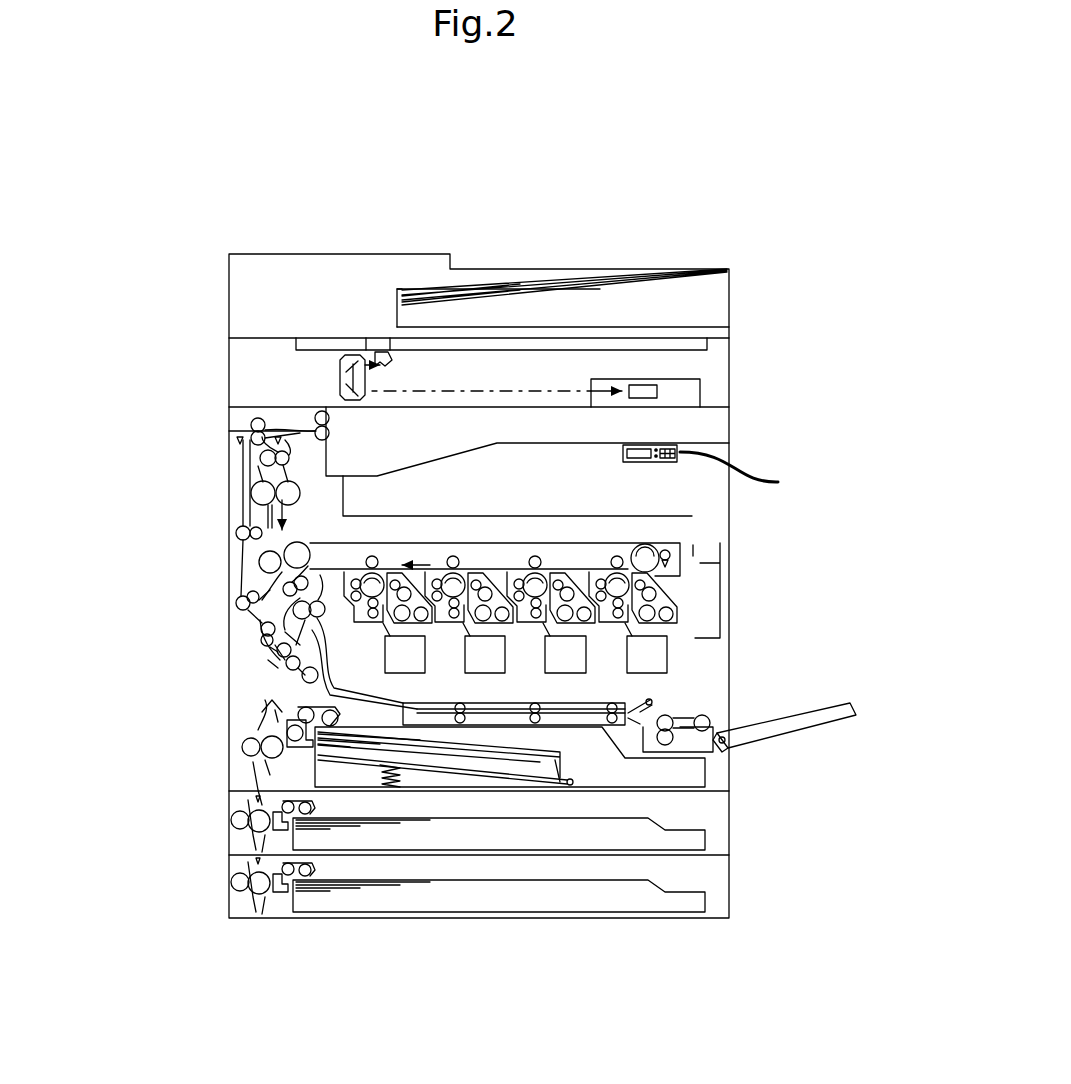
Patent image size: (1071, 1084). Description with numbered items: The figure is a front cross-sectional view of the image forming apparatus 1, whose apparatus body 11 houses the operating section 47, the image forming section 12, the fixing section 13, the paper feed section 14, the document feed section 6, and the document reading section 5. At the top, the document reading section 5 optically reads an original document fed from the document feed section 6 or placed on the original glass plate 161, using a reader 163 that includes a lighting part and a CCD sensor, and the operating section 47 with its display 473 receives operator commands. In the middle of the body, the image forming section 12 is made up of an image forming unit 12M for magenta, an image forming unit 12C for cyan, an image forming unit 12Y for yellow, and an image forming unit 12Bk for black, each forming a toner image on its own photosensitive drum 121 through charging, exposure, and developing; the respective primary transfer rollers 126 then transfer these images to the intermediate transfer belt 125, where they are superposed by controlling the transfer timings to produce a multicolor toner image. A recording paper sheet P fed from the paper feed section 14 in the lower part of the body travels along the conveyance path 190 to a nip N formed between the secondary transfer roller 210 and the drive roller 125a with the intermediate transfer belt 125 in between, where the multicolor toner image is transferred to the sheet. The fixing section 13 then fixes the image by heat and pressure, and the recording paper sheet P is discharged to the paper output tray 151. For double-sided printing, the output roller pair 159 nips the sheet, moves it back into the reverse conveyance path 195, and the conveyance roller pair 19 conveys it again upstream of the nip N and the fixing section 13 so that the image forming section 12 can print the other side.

The image forming apparatus 1 is at (803, 319).
The document reading section 5 is at (209, 367).
The document feed section 6 is at (592, 252).
The apparatus body 11 is at (740, 462).
The image forming section 12 is at (697, 574).
The image forming unit for black 12Bk is at (373, 554).
The image forming unit for yellow 12Y is at (457, 554).
The image forming unit for cyan 12C is at (537, 554).
The image forming unit for magenta 12M is at (620, 546).
The fixing section 13 is at (244, 495).
The paper feed section 14 is at (712, 812).
The conveyance roller pair 19 is at (342, 637).
The operating section 47 is at (743, 473).
The photosensitive drum 121 is at (611, 626).
The intermediate transfer belt 125 is at (628, 541).
The drive roller 125a is at (300, 545).
The primary transfer roller 126 is at (495, 547).
The paper output tray 151 is at (363, 476).
The output roller pair 159 is at (324, 413).
The original glass plate 161 is at (611, 345).
The reader 163 is at (329, 381).
The conveyance path 190 is at (260, 553).
The reverse conveyance path 195 is at (248, 545).
The secondary transfer roller 210 is at (265, 566).
The display 473 is at (628, 450).
The nip N is at (278, 537).
The recording paper sheet P is at (558, 748).